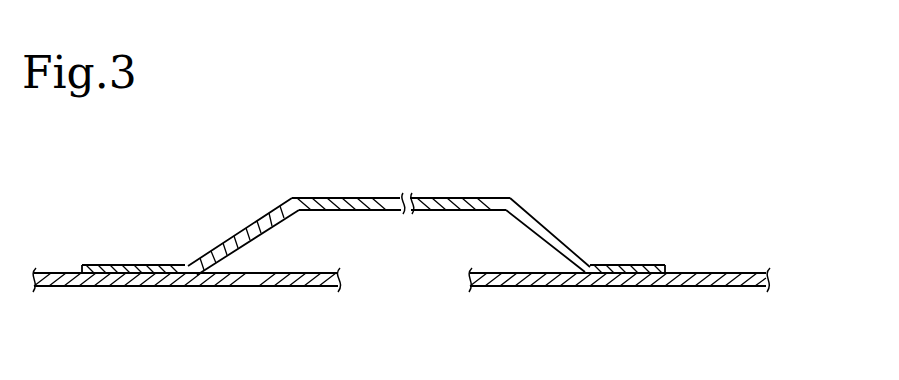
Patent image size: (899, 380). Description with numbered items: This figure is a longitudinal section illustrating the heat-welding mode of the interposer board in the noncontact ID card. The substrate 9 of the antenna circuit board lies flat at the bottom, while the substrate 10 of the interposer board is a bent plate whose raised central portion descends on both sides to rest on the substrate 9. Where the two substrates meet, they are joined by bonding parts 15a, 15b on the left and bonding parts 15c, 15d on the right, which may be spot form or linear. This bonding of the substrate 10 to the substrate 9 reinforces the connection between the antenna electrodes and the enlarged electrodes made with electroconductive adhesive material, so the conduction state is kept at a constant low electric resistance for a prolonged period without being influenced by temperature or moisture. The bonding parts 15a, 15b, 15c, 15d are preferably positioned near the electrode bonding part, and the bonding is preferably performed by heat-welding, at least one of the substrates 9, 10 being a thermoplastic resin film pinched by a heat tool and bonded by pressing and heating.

The substrate 9 is at (153, 287).
The substrate 10 is at (323, 198).
The bonding part 15a is at (112, 223).
The bonding part 15b is at (147, 264).
The bonding part 15c is at (641, 223).
The bonding part 15d is at (613, 264).